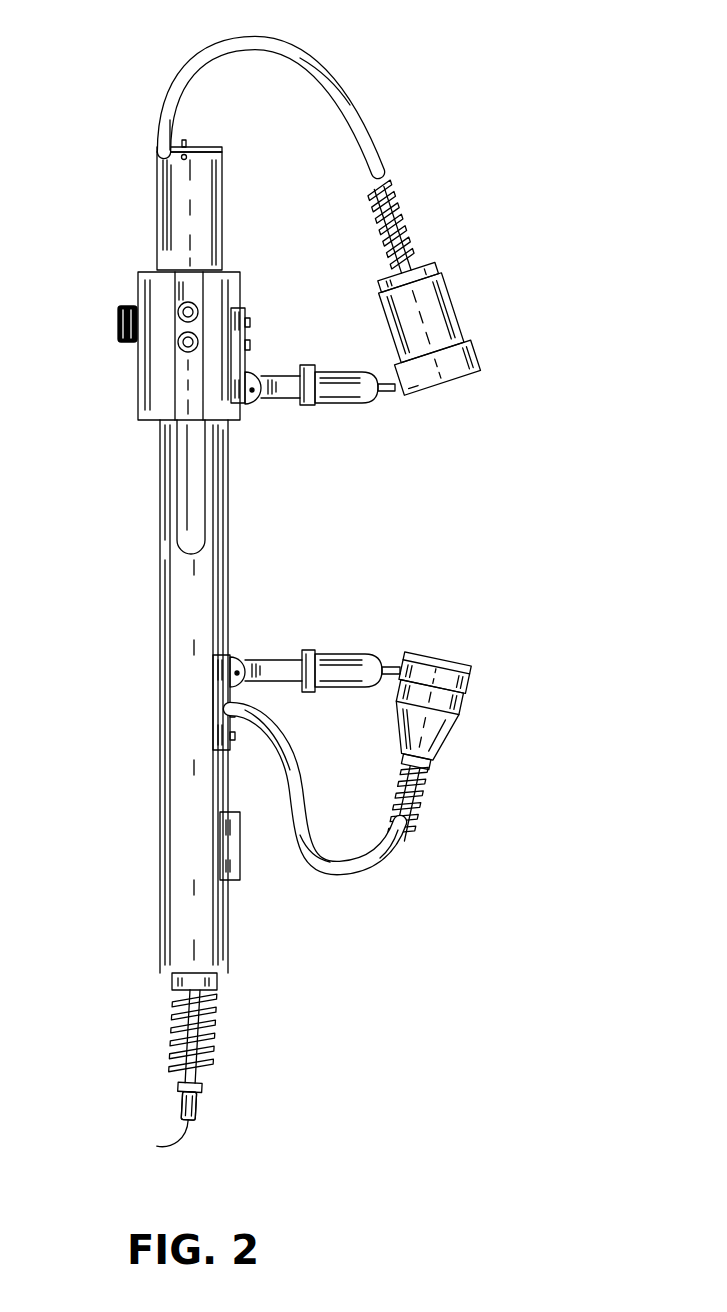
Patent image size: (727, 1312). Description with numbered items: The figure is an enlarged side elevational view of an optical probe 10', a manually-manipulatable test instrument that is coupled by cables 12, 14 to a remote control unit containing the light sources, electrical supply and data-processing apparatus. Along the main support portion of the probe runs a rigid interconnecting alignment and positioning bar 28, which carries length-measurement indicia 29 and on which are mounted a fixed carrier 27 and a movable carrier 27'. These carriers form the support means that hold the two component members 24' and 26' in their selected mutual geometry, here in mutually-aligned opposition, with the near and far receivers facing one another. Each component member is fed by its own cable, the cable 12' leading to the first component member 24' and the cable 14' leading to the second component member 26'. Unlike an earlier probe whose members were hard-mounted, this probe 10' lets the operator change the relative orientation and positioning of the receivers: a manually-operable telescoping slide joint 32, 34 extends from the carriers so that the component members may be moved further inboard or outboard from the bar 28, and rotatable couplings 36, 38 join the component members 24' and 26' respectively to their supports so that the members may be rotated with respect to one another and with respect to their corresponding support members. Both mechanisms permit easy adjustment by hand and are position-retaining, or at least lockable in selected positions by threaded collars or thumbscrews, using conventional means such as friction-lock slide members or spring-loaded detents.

The optical probe 10' is at (372, 510).
The cable 12' is at (286, 107).
The cable 14' is at (328, 810).
The component member 24' is at (422, 283).
The component member 26' is at (442, 749).
The fixed carrier 27 is at (265, 345).
The movable carrier 27' is at (249, 677).
The alignment and positioning bar 28 is at (167, 592).
The length-measurement indicia 29 is at (184, 434).
The telescoping slide joint 32 is at (118, 325).
The telescoping slide joint 34 is at (322, 653).
The rotatable coupling 36 is at (380, 372).
The rotatable coupling 38 is at (390, 662).
The cable 12 is at (162, 1076).
The cable 14 is at (152, 1126).